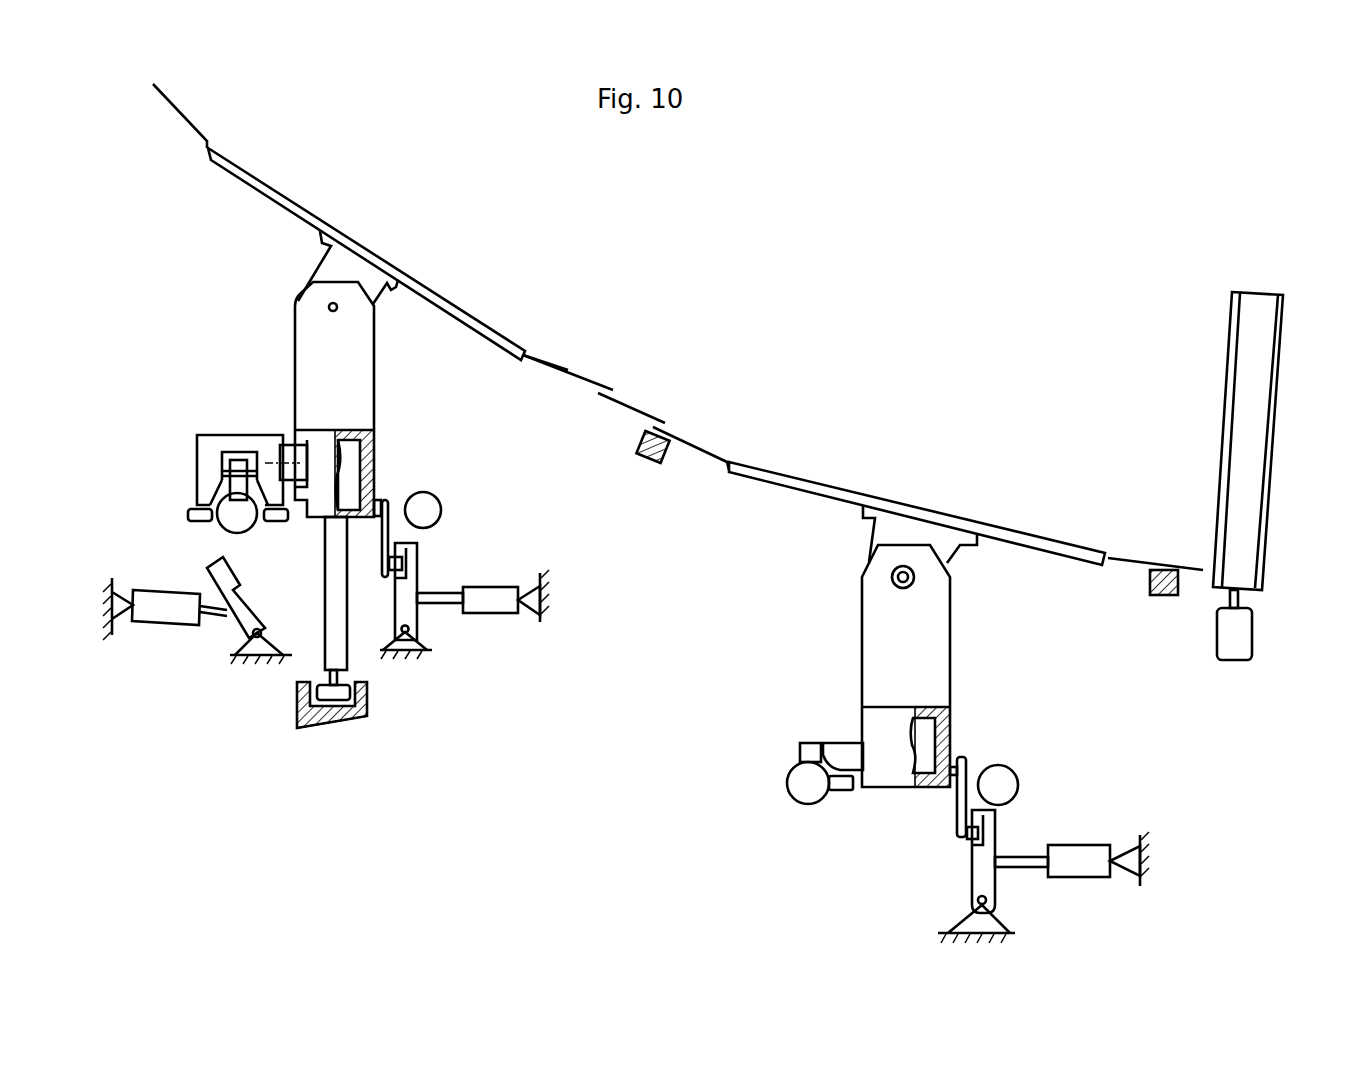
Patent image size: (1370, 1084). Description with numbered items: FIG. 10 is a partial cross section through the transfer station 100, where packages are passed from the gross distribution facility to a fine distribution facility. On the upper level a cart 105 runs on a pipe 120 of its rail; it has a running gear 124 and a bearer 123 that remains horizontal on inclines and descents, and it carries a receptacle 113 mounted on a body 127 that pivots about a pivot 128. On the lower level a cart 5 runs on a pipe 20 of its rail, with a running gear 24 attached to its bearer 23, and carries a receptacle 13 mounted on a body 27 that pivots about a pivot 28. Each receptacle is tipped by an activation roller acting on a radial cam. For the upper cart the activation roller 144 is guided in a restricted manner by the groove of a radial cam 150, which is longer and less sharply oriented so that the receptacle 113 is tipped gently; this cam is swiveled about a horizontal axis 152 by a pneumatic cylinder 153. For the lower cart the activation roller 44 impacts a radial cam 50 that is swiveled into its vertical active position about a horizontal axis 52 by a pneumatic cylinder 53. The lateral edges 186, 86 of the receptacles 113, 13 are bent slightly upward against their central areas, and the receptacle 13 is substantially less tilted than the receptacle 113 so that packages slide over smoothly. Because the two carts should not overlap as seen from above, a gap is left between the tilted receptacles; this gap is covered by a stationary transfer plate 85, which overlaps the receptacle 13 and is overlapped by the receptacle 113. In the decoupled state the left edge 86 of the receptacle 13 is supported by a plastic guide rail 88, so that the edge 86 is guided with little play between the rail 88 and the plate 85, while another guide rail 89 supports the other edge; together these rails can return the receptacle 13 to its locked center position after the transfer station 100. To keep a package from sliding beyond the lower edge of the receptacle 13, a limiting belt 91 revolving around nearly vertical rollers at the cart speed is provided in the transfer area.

The cart 105 is at (334, 415).
The receptacle 113 is at (434, 284).
The pivot hole 128 is at (329, 308).
The pressing head body 127 is at (265, 399).
The running gear 124 is at (163, 464).
The bearer 123 is at (379, 462).
The pipe 120 is at (438, 498).
The activation roller 144 is at (409, 561).
The horizontal axis 152 is at (282, 609).
The radial cam 150 is at (251, 614).
The pneumatic cylinder 153 is at (162, 611).
The lateral edge 186 is at (575, 370).
The transfer plate 85 is at (634, 407).
The lateral edge 86 is at (698, 439).
The plastic guide rail 88 is at (645, 463).
The receptacle 13 is at (764, 467).
The transfer station 100 is at (892, 594).
The cart 5 is at (892, 690).
The pivot pin 28 is at (905, 567).
The pressing head body 27 is at (895, 612).
The bearer 23 is at (953, 719).
The running gear 24 is at (781, 739).
The pipe 20 is at (793, 796).
The activation roller 44 is at (970, 840).
The radial cam 50 is at (972, 874).
The horizontal axis 52 is at (957, 905).
The pneumatic cylinder 53 is at (1092, 845).
The limiting belt 91 is at (1278, 418).
The guide rail 89 is at (1168, 597).